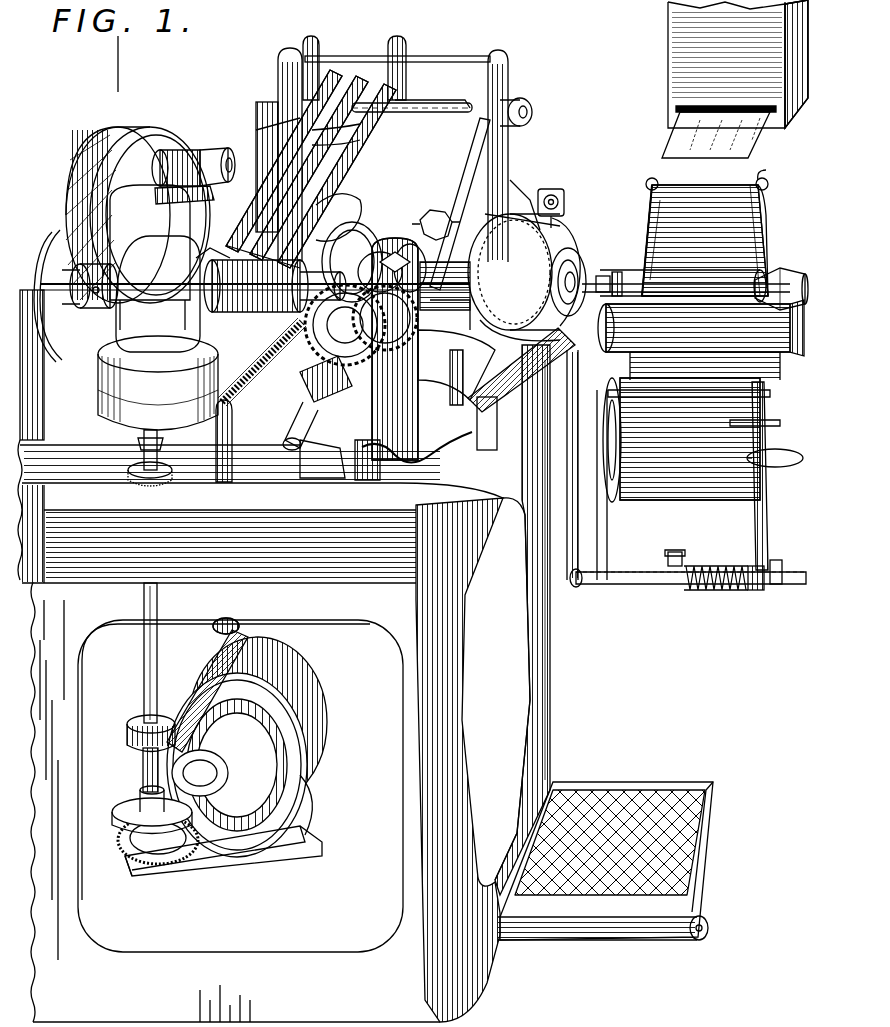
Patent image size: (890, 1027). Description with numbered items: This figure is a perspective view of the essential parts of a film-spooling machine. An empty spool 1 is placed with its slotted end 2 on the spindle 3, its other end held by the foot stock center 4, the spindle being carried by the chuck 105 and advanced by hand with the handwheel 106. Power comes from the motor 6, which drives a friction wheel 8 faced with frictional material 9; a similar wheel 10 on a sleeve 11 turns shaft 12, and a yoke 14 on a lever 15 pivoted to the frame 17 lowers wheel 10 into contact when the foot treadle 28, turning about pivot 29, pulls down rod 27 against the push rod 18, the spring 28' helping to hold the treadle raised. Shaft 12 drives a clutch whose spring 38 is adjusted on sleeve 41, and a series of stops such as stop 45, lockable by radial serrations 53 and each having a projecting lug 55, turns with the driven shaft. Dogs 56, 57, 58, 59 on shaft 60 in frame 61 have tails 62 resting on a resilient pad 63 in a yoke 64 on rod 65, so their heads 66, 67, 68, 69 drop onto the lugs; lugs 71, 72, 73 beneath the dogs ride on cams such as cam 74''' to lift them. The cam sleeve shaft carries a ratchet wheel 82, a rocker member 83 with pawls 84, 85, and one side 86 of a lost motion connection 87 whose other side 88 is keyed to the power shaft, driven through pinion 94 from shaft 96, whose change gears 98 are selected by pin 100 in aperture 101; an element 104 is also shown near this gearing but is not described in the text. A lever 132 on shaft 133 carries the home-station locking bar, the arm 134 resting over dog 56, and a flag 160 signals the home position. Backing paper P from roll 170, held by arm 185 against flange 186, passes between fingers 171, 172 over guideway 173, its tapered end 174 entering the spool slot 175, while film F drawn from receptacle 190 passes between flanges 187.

The spool 1 is at (762, 270).
The slotted end 2 is at (603, 276).
The spindle 3 is at (614, 280).
The foot stock center 4 is at (764, 280).
The motor 6 is at (283, 668).
The friction wheel 8 is at (198, 870).
The frictional material 9 is at (128, 851).
The wheel 10 is at (128, 817).
The sleeve 11 is at (143, 773).
The shaft 12 is at (144, 680).
The yoke 14 is at (127, 728).
The lever 15 is at (203, 645).
The frame 17 is at (458, 528).
The push rod 18 is at (213, 626).
The rod 27 is at (552, 602).
The foot treadle 28 is at (607, 849).
The spring 28' is at (244, 441).
The pivot 29 is at (708, 925).
The spring 38 is at (64, 240).
The sleeve 41 is at (62, 266).
The stop 45 is at (150, 332).
The radial serrations 53 is at (212, 300).
The projecting lug 55 is at (210, 262).
The dog 56 is at (262, 108).
The dog 57 is at (270, 130).
The dog 58 is at (340, 130).
The dog 59 is at (340, 145).
The shaft 60 is at (432, 96).
The frame 61 is at (278, 80).
The tail 62 is at (330, 78).
The resilient pad 63 is at (385, 60).
The yoke 64 is at (308, 58).
The rod 65 is at (442, 56).
The stop contacting head 66 is at (218, 248).
The stop contacting head 67 is at (264, 203).
The stop contacting head 68 is at (372, 250).
The stop contacting head 69 is at (398, 248).
The lug 71 is at (335, 185).
The lug 72 is at (340, 222).
The lug 73 is at (352, 232).
The cam 74''' is at (489, 204).
The ratchet wheel 82 is at (170, 232).
The rocker member 83 is at (155, 134).
The pawl 84 is at (176, 150).
The pawl 85 is at (178, 148).
The side of lost motion connection 86 is at (194, 150).
The lost motion connection 87 is at (134, 130).
The side of lost motion connection 88 is at (108, 158).
The pinion 94 is at (434, 212).
The shaft 96 is at (310, 404).
The gear 98 is at (318, 336).
The pin 100 is at (406, 420).
The aperture 101 is at (312, 476).
The spring 104 is at (254, 380).
The chuck 105 is at (576, 262).
The handwheel 106 is at (548, 236).
The lever 132 is at (548, 216).
The shaft 133 is at (514, 188).
The arm 134 is at (176, 252).
The flag 160 is at (562, 182).
The roll 170 is at (660, 500).
The tensioning finger 171 is at (765, 422).
The tensioning finger 172 is at (770, 390).
The guideway 173 is at (764, 216).
The tapered end 174 is at (656, 222).
The spool slot 175 is at (756, 352).
The arm 185 is at (767, 512).
The flange 186 is at (618, 502).
The flange 187 is at (648, 196).
The receptacle 190 is at (700, 56).
The film F is at (765, 150).
The backing paper P is at (768, 436).